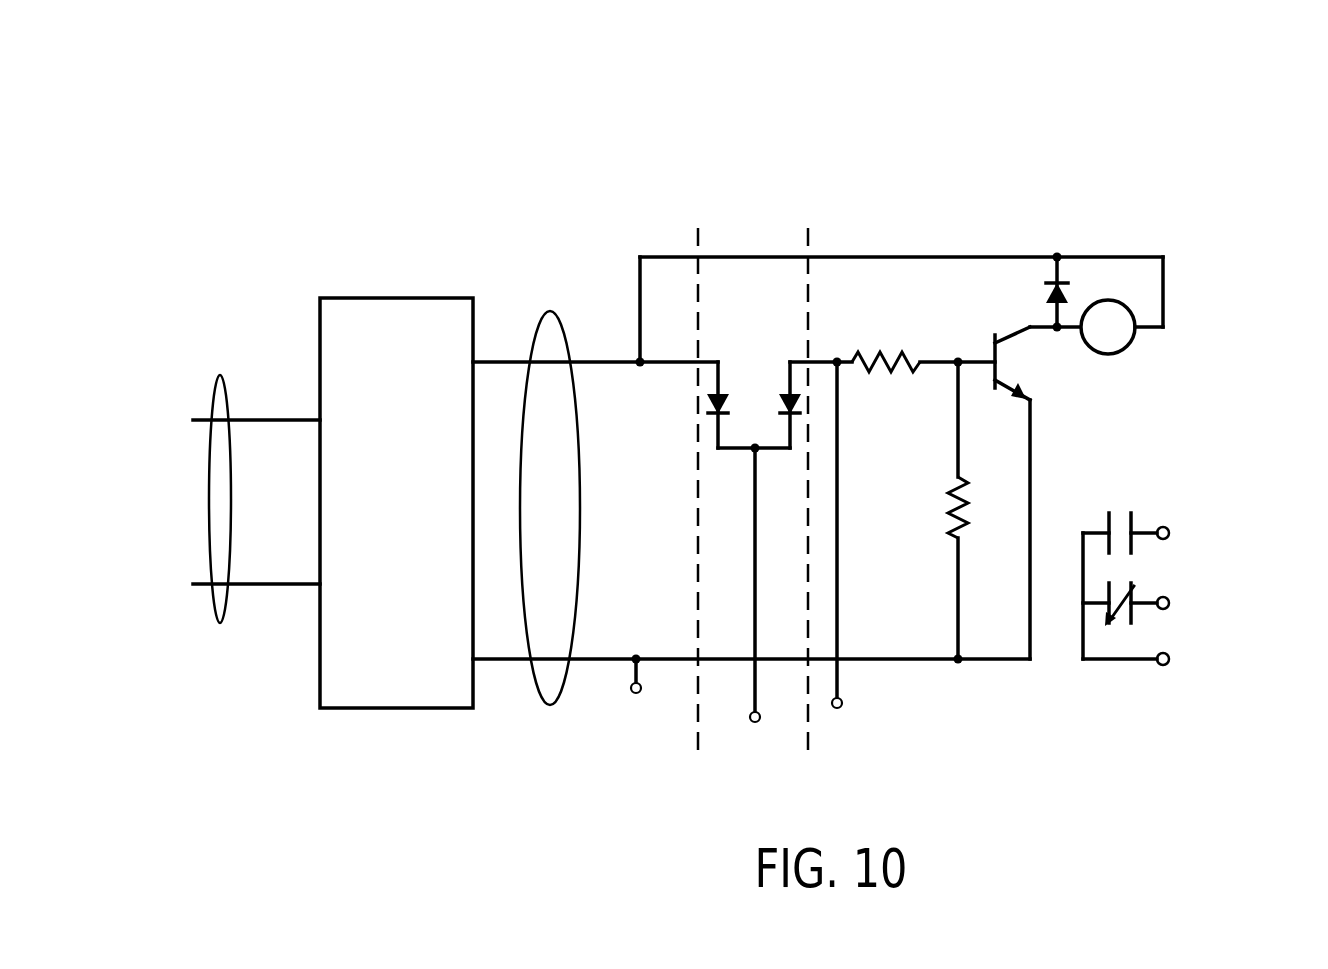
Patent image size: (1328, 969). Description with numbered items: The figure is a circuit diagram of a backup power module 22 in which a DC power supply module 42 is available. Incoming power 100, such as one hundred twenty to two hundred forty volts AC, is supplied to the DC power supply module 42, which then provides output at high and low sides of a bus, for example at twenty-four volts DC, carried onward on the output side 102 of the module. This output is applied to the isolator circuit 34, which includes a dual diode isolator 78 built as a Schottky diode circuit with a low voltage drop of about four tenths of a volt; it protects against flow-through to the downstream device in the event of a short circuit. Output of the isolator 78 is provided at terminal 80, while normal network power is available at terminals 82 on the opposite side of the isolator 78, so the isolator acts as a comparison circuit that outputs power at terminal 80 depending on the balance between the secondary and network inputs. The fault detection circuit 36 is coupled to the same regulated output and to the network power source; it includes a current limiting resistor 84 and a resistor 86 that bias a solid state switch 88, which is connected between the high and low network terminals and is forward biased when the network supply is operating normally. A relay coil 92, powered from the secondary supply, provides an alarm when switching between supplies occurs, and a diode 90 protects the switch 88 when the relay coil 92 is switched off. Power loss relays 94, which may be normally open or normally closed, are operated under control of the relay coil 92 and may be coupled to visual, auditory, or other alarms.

The module 22 is at (1140, 170).
The isolator circuit 34 is at (767, 177).
The fault detection circuit 36 is at (990, 177).
The DC power supply module 42 is at (363, 297).
The dual diode isolator 78 is at (758, 357).
The terminal 80 is at (755, 722).
The terminals 82 is at (635, 693).
The current limiting resistor 84 is at (882, 351).
The resistor 86 is at (968, 503).
The solid state switch 88 is at (1016, 491).
The diode 90 is at (1068, 285).
The relay coil 92 is at (1128, 345).
The power loss relays 94 is at (1193, 496).
The incoming power 100 is at (210, 497).
The output cable 102 is at (585, 506).